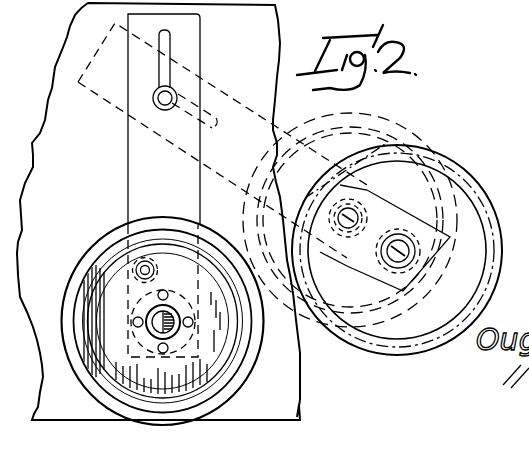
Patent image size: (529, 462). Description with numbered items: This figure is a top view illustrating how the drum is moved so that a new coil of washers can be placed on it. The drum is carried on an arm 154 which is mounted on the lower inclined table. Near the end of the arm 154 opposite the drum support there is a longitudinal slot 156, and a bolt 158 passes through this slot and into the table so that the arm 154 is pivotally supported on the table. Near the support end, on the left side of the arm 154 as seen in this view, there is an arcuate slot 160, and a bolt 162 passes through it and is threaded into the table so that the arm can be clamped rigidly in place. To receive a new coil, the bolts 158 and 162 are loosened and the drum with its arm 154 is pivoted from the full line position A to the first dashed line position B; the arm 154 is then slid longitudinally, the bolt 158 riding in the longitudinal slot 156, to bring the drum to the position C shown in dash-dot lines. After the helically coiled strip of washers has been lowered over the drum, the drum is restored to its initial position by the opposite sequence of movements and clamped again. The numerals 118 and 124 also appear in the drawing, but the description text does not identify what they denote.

The crank arm 118 is at (528, 76).
The housing 124 is at (284, 400).
The arm 154 is at (137, 178).
The longitudinal slot 156 is at (168, 38).
The bolt 158 is at (169, 96).
The arcuate slot 160 is at (134, 270).
The bolt 162 is at (152, 262).
The full line position A is at (67, 364).
The first dashed line position B is at (389, 115).
The dash-dot line position C is at (468, 171).